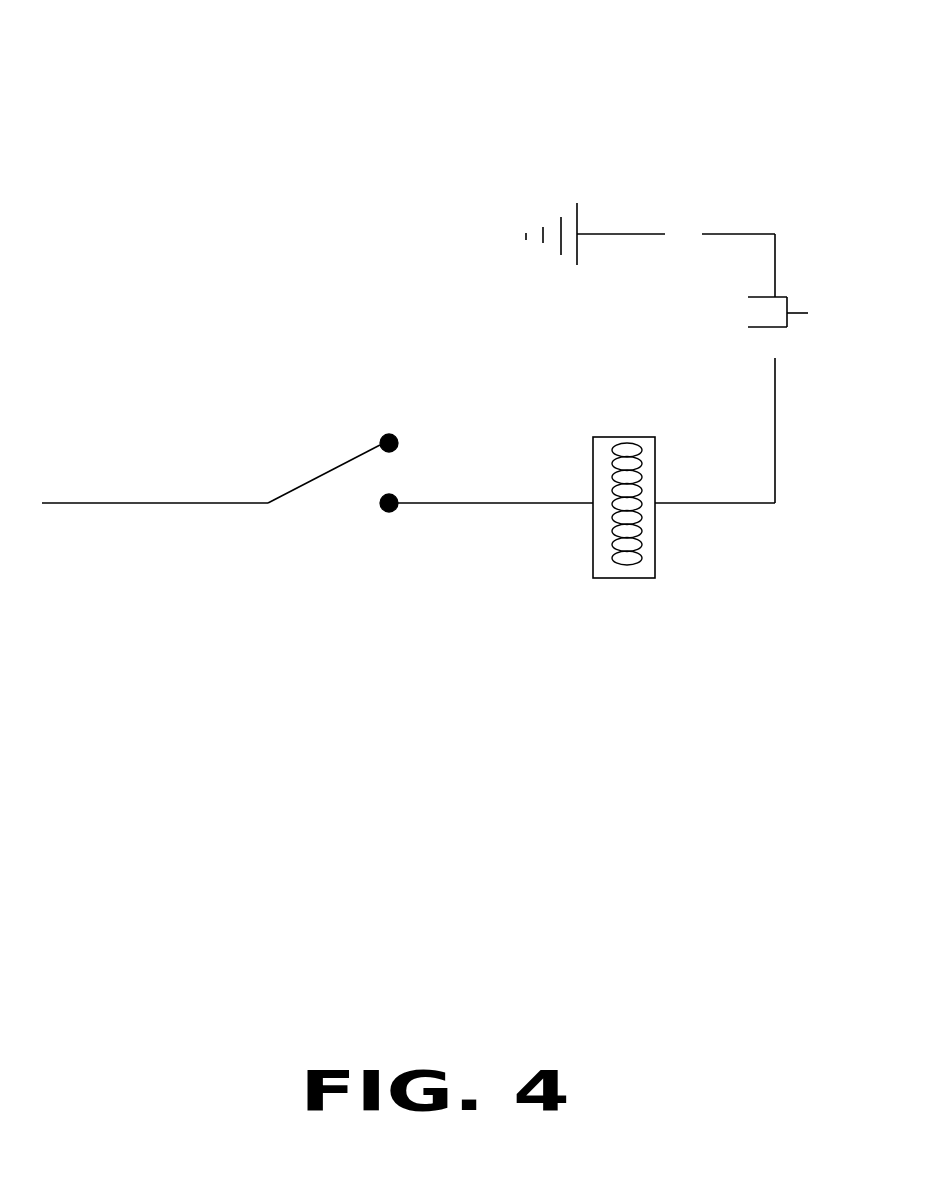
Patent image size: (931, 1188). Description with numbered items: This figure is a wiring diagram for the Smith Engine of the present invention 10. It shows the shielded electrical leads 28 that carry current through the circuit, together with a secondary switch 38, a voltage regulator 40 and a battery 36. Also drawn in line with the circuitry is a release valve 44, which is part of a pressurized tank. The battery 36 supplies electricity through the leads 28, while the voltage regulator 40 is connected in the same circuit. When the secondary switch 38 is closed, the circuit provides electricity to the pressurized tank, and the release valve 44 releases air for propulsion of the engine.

The Smith Engine 10 is at (708, 118).
The shielded electrical leads 28 is at (213, 498).
The battery 36 is at (577, 210).
The secondary switch 38 is at (345, 465).
The voltage regulator 40 is at (787, 297).
The release valve 44 is at (593, 538).